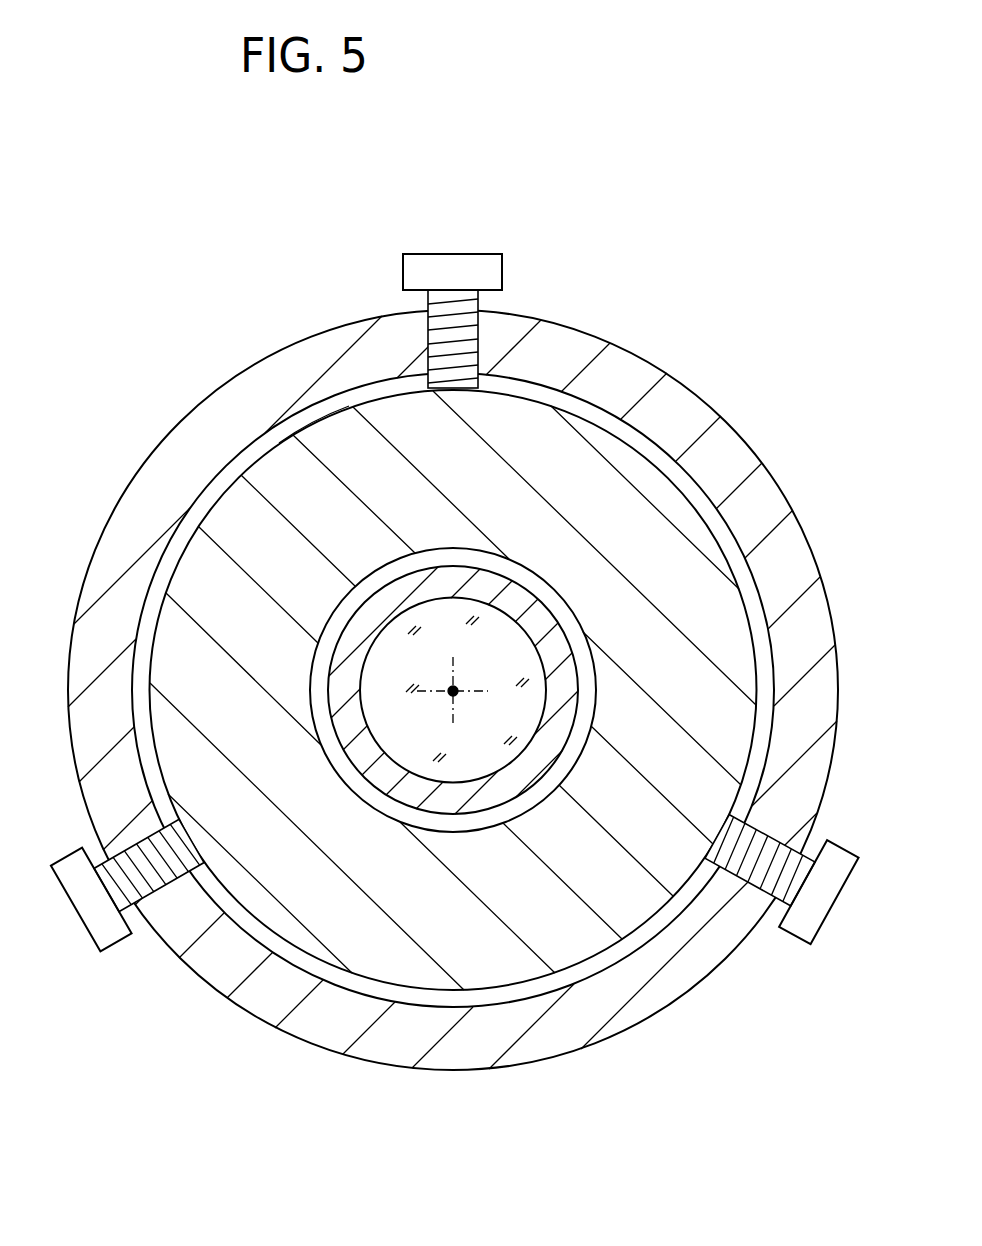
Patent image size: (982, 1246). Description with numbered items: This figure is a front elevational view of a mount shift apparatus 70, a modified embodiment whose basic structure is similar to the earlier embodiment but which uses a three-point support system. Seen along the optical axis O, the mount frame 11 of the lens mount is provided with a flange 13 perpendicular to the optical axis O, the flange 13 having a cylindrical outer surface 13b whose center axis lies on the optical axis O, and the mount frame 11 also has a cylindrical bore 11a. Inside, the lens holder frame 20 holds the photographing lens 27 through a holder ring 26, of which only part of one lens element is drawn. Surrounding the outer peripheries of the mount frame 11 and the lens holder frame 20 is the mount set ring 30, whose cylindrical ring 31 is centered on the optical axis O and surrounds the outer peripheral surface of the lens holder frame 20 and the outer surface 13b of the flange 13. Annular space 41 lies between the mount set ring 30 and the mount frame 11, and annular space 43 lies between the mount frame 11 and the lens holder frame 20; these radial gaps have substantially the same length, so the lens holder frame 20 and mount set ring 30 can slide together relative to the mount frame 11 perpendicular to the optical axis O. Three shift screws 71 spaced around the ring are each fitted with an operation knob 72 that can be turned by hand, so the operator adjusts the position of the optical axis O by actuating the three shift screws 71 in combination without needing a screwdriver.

The mount shift apparatus 70 is at (468, 632).
The shift screw 71 is at (470, 337).
The operation knob 72 is at (495, 277).
The mount set ring 30 is at (476, 690).
The cylindrical ring 31 is at (760, 476).
The annular space 41 is at (717, 530).
The annular space 43 is at (572, 620).
The cylindrical outer surface 13b is at (303, 427).
The mount frame 11 is at (453, 730).
The flange 13 is at (302, 918).
The cylindrical bore 11a is at (501, 565).
The photographing lens 27 is at (442, 772).
The lens holder frame 20 is at (465, 756).
The holder ring 26 is at (488, 798).
The optical axis O is at (458, 685).